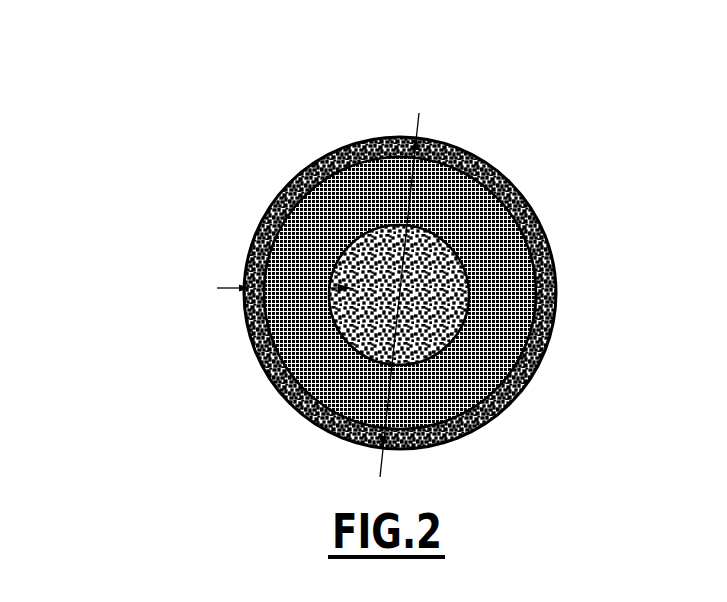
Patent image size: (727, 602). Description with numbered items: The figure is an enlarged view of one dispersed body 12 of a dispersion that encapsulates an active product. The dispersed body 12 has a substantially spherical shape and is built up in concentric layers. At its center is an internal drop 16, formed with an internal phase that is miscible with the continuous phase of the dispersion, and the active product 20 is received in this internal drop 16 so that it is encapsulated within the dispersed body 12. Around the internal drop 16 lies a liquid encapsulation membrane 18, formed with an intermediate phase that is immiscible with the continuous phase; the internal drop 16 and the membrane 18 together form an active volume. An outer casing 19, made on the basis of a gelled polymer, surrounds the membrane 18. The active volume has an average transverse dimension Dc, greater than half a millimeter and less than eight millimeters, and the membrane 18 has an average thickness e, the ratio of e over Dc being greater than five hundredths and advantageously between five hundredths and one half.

The dispersed body 12 is at (331, 256).
The internal drop 16 is at (345, 337).
The liquid encapsulation membrane 18 is at (472, 223).
The outer casing 19 is at (475, 157).
The active product 20 is at (465, 317).
The average transverse dimension Dc is at (411, 187).
The average thickness of the membrane e is at (279, 313).